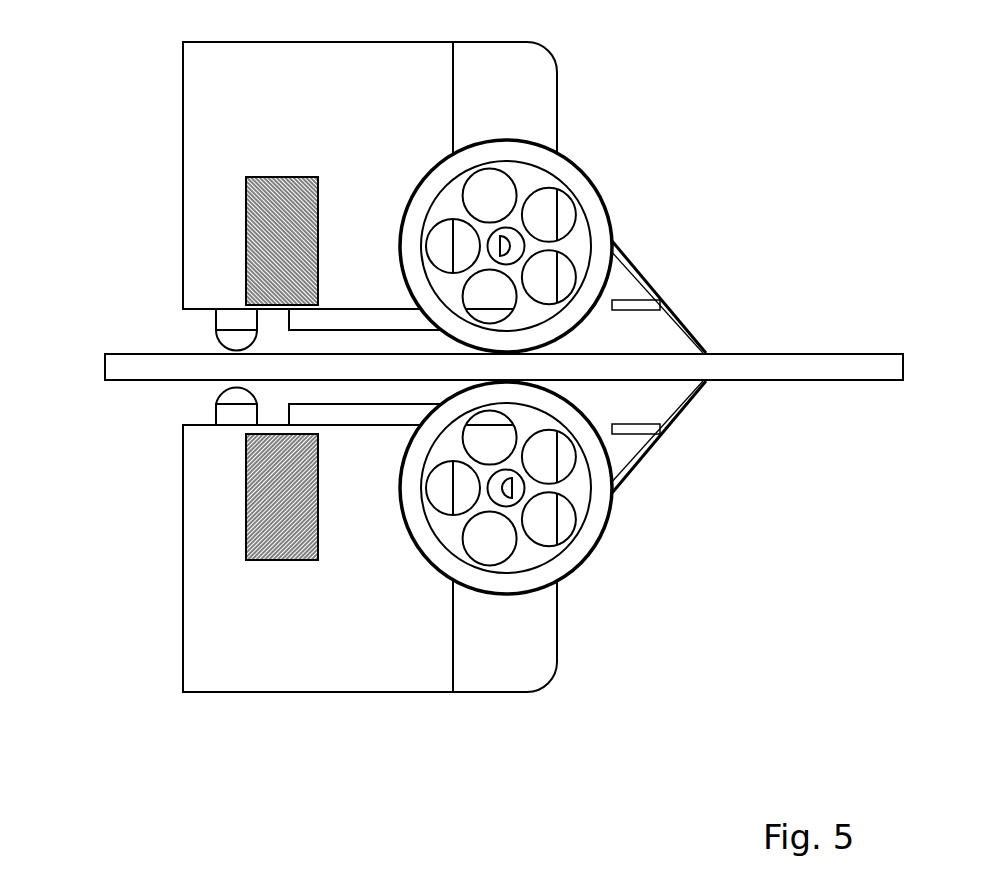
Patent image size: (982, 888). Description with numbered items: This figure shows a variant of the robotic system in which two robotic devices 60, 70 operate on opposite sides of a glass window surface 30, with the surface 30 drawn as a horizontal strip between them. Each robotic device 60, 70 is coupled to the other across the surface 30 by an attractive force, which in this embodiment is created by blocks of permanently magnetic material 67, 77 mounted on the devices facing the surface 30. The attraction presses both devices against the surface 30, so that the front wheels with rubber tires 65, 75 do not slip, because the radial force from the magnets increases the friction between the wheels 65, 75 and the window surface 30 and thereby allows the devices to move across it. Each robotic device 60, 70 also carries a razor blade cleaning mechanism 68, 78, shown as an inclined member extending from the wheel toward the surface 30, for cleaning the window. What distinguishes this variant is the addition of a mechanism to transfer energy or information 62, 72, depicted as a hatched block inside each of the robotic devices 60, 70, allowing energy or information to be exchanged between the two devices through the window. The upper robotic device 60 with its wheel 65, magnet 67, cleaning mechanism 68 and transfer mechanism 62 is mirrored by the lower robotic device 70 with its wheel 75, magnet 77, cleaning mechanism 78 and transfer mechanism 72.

The glass window surface 30 is at (793, 368).
The robotic device 60 is at (235, 100).
The mechanism to transfer energy or information 62 is at (247, 222).
The front wheel with rubber tire 65 is at (578, 187).
The block of permanently magnetic material 67 is at (233, 343).
The razor blade cleaning mechanism 68 is at (645, 272).
The robotic device 70 is at (235, 635).
The mechanism to transfer energy or information 72 is at (247, 512).
The front wheel with rubber tire 75 is at (592, 553).
The block of permanently magnetic material 77 is at (235, 392).
The razor blade cleaning mechanism 78 is at (649, 456).